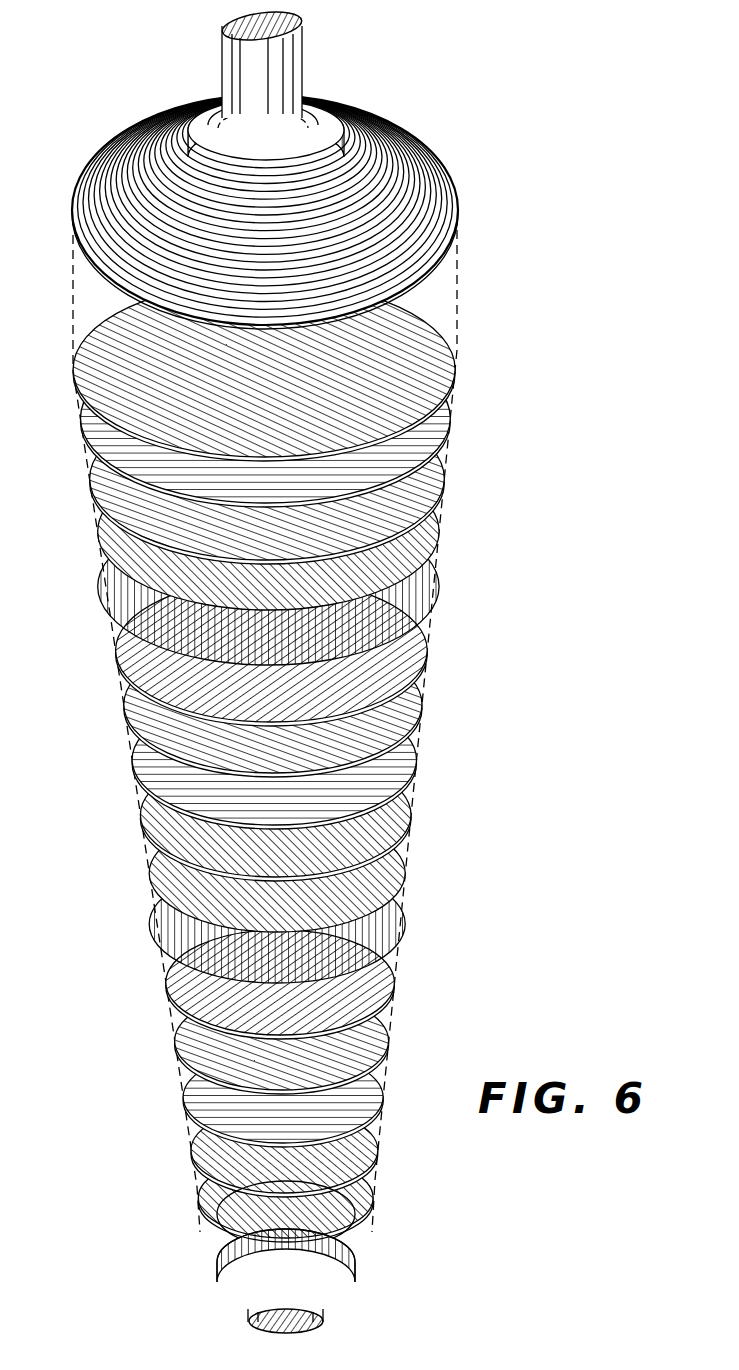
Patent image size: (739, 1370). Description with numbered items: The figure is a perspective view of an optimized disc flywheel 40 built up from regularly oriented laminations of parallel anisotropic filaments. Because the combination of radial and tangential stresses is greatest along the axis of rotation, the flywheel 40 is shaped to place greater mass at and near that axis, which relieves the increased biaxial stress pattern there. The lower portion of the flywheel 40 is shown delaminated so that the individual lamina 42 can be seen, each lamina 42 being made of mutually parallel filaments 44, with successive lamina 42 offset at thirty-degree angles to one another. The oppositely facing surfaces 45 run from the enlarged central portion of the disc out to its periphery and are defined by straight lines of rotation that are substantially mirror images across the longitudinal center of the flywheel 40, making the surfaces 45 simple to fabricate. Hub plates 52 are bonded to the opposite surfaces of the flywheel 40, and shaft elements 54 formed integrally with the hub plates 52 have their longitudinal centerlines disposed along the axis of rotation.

The optimized disc flywheel 40 is at (280, 670).
The lamina 42 is at (280, 761).
The filaments 44 is at (405, 806).
The oppositely facing surfaces 45 is at (418, 178).
The hub plates 52 is at (307, 97).
The shaft elements 54 is at (294, 33).